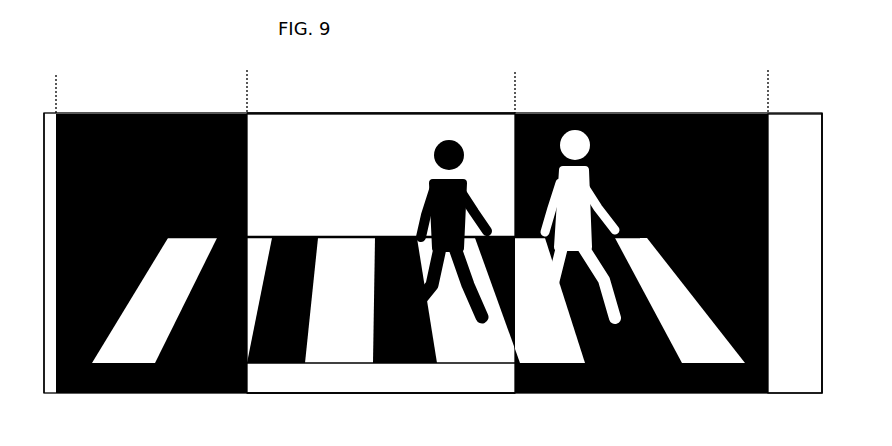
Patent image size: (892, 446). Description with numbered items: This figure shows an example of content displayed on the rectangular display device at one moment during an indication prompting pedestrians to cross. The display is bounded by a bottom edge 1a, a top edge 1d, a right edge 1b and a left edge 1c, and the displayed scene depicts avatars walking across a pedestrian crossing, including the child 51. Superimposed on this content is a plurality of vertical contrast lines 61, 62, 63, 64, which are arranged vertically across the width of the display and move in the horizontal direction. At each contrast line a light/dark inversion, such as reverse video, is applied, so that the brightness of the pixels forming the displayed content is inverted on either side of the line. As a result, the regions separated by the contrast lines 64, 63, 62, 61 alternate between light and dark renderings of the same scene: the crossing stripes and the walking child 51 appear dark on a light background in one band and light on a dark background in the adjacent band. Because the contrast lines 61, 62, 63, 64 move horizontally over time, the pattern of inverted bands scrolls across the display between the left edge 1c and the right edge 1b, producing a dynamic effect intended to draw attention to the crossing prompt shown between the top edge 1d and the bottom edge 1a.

The vertical contrast line 64 is at (57, 93).
The vertical contrast line 63 is at (246, 96).
The vertical contrast line 62 is at (514, 96).
The vertical contrast line 61 is at (767, 96).
The child avatar 51 is at (432, 182).
The bottom edge 1a is at (377, 394).
The right edge 1b is at (822, 348).
The left edge 1c is at (44, 348).
The top edge 1d is at (338, 112).